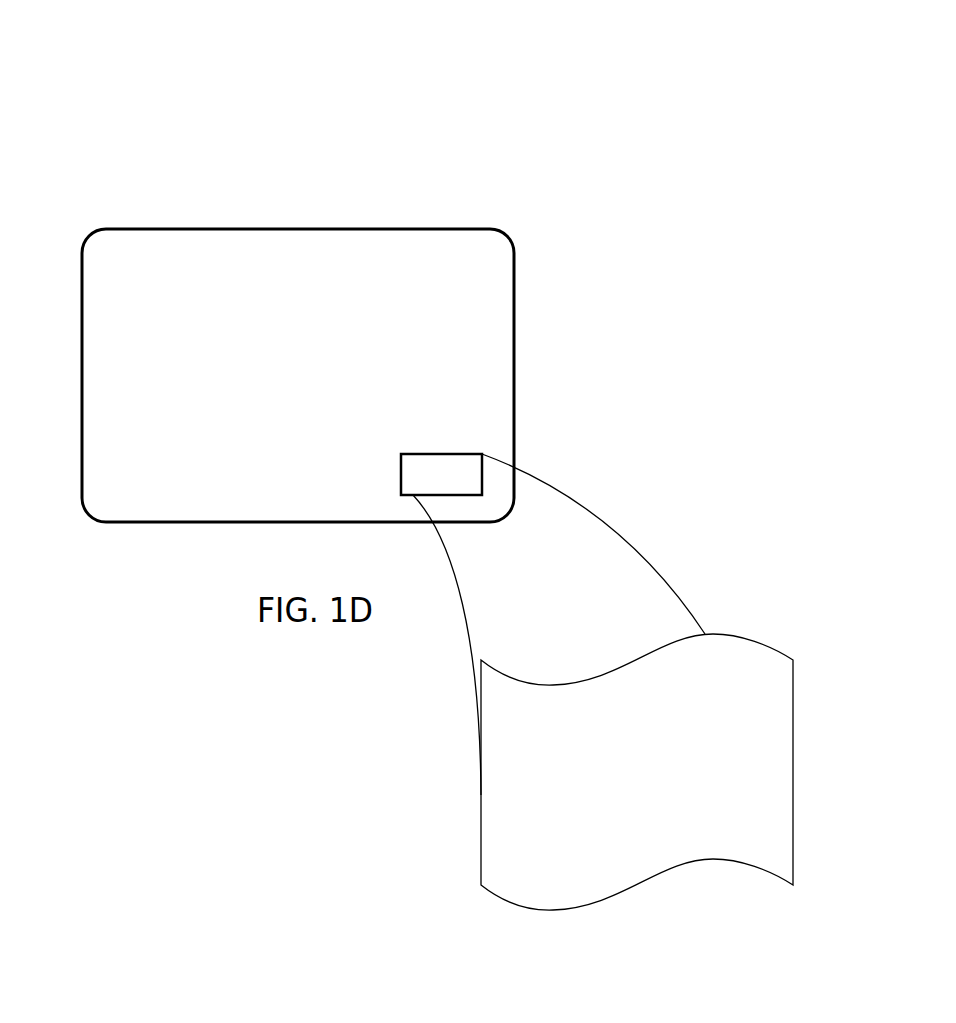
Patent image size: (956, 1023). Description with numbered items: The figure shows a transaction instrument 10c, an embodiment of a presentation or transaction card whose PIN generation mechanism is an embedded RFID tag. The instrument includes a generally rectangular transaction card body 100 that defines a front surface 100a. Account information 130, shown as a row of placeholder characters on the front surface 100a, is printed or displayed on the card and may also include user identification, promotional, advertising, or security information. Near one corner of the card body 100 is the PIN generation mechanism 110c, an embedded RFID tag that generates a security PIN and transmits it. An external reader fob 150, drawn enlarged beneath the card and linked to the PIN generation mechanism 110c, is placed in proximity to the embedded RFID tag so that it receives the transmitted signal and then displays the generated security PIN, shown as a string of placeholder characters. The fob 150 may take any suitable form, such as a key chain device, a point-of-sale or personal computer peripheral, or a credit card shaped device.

The transaction instrument 10c is at (680, 46).
The transaction card body 100 is at (417, 229).
The front surface 100a is at (117, 445).
The account information 130 is at (447, 291).
The PIN generation mechanism 110c is at (450, 477).
The external reader fob 150 is at (515, 807).